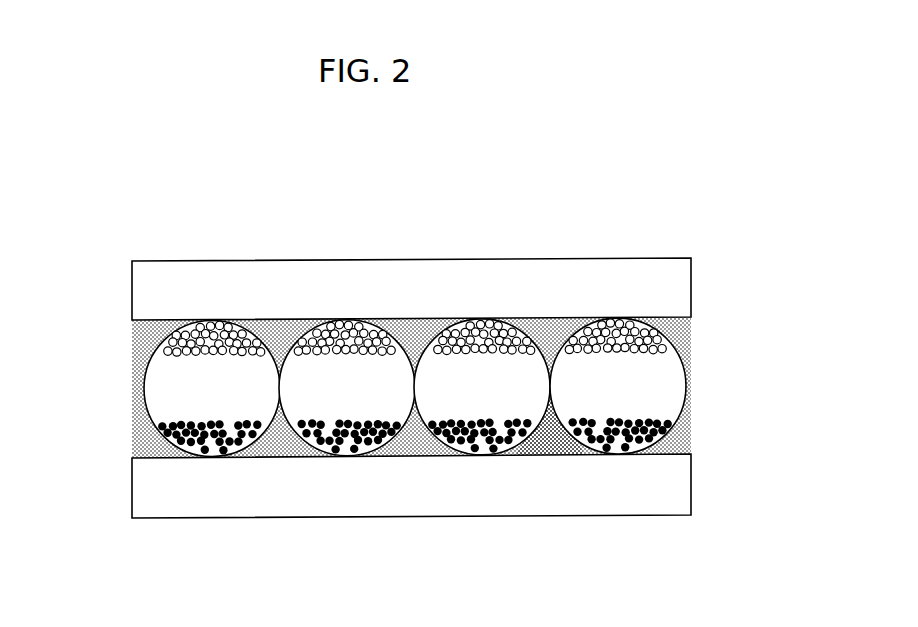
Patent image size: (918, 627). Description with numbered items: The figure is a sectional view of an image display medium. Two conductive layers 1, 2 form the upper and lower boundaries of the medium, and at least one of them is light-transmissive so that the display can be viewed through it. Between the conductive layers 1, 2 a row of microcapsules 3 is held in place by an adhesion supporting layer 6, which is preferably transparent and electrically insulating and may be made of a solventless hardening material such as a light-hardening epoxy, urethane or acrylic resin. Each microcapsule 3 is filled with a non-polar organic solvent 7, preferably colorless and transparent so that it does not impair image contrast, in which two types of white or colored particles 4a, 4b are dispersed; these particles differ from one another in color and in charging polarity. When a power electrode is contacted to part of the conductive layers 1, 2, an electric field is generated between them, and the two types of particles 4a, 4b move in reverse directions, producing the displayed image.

The conductive layer 1 is at (148, 482).
The conductive layer 2 is at (148, 293).
The microcapsule 3 is at (689, 420).
The white or colored particles 4a is at (633, 320).
The white or colored particles 4b is at (678, 453).
The adhesion supporting layer 6 is at (553, 440).
The non-polar organic solvent 7 is at (638, 383).